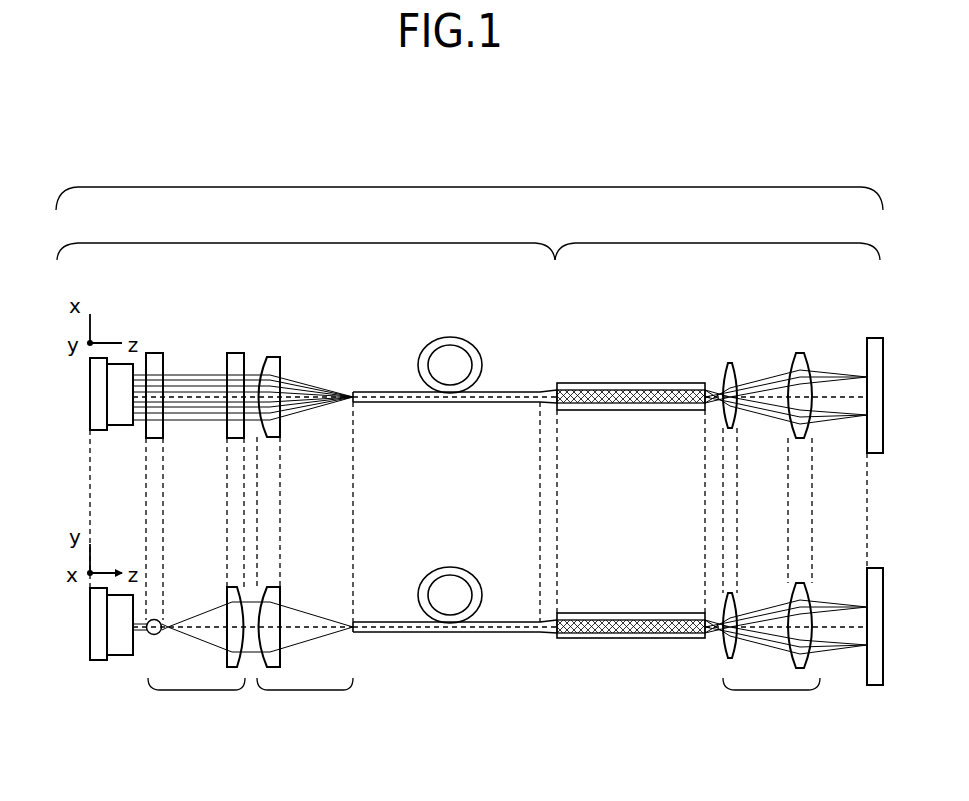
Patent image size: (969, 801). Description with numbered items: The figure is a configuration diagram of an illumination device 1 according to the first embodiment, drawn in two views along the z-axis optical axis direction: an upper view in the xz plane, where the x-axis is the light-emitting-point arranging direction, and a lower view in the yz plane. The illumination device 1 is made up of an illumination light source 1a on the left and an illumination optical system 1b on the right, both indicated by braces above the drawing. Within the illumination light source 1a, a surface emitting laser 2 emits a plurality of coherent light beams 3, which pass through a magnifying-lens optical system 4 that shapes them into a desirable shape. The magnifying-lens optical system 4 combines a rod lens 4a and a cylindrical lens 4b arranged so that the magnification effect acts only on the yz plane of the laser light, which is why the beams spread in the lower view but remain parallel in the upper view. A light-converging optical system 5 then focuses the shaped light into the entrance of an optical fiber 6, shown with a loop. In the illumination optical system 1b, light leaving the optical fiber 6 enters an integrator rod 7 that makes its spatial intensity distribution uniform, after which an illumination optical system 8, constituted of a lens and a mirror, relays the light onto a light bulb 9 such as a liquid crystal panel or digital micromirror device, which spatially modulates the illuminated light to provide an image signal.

The illumination device 1 is at (508, 187).
The illumination light source 1a is at (308, 243).
The illumination optical system 1b is at (715, 243).
The surface emitting laser 2 is at (104, 431).
The coherent light beams 3 is at (133, 426).
The magnifying-lens optical system 4 is at (197, 690).
The rod lens 4a is at (153, 636).
The cylindrical lens 4b is at (229, 666).
The light-converging optical system 5 is at (305, 690).
The optical fiber 6 is at (445, 633).
The integrator rod 7 is at (628, 640).
The illumination optical system 8 is at (772, 690).
The light bulb 9 is at (872, 686).